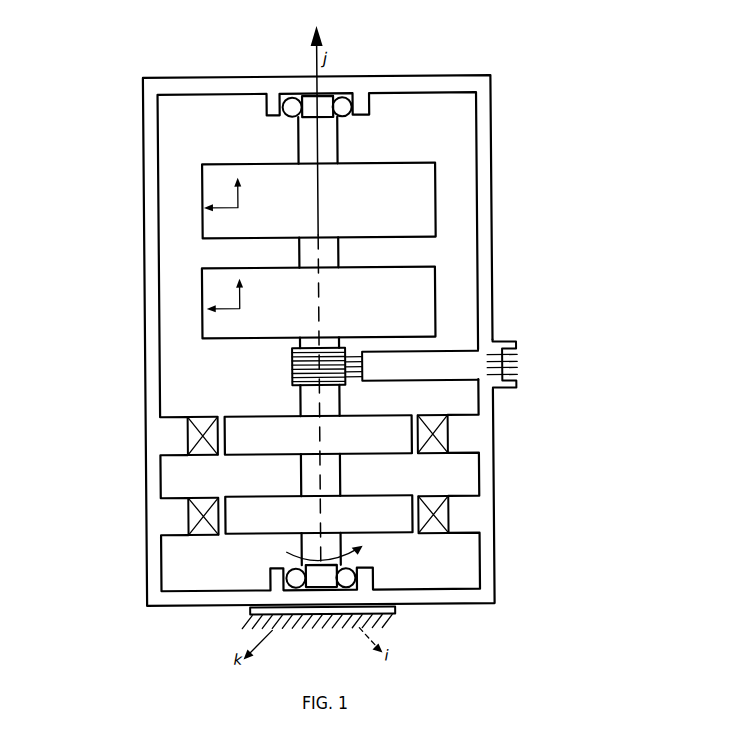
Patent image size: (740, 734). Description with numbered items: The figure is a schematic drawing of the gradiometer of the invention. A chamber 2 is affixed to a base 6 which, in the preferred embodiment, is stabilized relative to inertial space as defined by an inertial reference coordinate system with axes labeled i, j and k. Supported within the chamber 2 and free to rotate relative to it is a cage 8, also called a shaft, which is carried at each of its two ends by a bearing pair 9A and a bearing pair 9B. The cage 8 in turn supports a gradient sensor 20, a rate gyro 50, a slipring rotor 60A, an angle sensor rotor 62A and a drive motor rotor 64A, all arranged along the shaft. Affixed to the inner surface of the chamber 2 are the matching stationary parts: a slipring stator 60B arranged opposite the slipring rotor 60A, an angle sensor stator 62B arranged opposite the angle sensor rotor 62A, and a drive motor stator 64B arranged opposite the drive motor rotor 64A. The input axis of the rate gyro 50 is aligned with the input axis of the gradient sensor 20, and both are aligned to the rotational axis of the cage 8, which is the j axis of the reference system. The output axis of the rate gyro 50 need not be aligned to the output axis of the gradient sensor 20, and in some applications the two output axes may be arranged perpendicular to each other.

The chamber 2 is at (146, 433).
The base 6 is at (248, 609).
The cage 8 is at (338, 152).
The bearing pair 9A is at (352, 116).
The bearing pair 9B is at (352, 589).
The gradient sensor 20 is at (319, 201).
The rate gyro 50 is at (319, 303).
The slipring rotor 60A is at (291, 372).
The slipring stator 60B is at (362, 357).
The angle sensor rotor 62A is at (318, 435).
The angle sensor stator 62B is at (449, 432).
The drive motor rotor 64A is at (318, 514).
The drive motor stator 64B is at (449, 512).